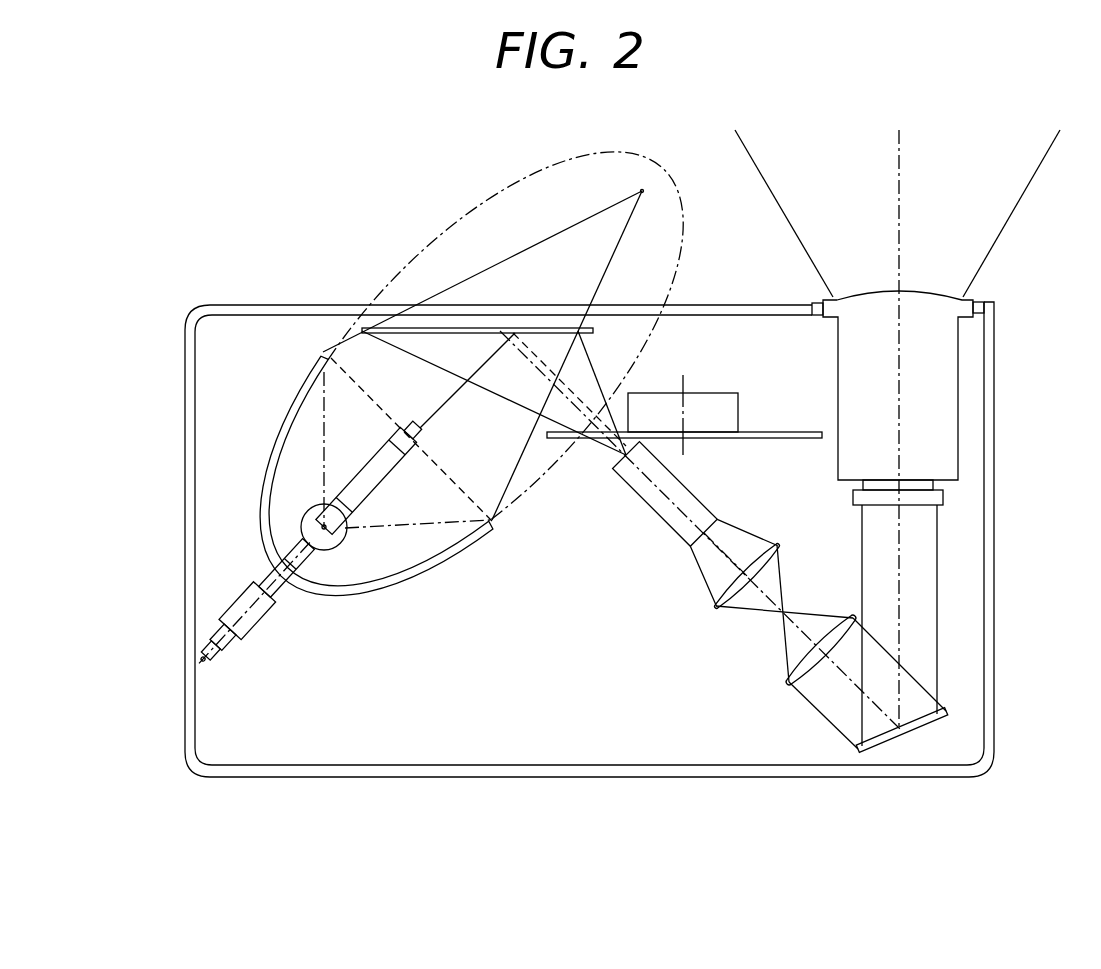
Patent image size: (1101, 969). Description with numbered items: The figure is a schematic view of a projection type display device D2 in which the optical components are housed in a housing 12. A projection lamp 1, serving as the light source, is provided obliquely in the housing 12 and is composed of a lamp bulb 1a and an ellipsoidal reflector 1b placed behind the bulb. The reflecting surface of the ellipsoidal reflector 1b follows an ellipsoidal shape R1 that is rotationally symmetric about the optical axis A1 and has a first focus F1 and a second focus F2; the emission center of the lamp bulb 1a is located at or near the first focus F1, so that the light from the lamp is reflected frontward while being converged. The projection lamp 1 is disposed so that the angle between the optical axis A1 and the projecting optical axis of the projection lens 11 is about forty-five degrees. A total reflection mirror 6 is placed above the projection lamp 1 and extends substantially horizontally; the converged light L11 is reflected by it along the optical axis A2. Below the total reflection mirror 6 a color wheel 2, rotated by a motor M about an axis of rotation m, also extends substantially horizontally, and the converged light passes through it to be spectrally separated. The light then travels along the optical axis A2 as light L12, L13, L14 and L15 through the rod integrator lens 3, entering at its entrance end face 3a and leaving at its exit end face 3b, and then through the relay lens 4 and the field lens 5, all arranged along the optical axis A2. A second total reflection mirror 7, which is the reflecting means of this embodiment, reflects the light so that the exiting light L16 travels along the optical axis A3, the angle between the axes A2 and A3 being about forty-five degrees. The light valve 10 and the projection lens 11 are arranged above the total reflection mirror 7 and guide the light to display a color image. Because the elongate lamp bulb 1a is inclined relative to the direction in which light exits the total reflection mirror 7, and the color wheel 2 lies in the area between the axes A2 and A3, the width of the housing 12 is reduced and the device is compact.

The projection lamp 1 is at (121, 505).
The lamp bulb 1a is at (303, 523).
The ellipsoidal reflector 1b is at (277, 553).
The color wheel 2 is at (792, 432).
The rod integrator lens 3 is at (668, 652).
The entrance end face 3a is at (613, 468).
The exit end face 3b is at (691, 532).
The relay lens 4 is at (778, 543).
The field lens 5 is at (855, 620).
The total reflection mirror 6 is at (467, 327).
The total reflection mirror 7 is at (888, 737).
The light valve 10 is at (943, 498).
The projection lens 11 is at (958, 453).
The housing 12 is at (185, 340).
The projection type display device D2 is at (211, 279).
The motor M is at (726, 402).
The axis of rotation m is at (687, 380).
The first focus F1 is at (320, 523).
The second focus F2 is at (642, 191).
The ellipsoidal shape R1 is at (563, 167).
The optical axis A1 is at (372, 337).
The optical axis A2 is at (590, 385).
The optical axis A3 is at (900, 648).
The exiting light L11 is at (355, 358).
The exiting light L12 is at (583, 388).
The light L13 is at (712, 572).
The light L14 is at (752, 600).
The light L15 is at (828, 700).
The light L16 is at (918, 592).